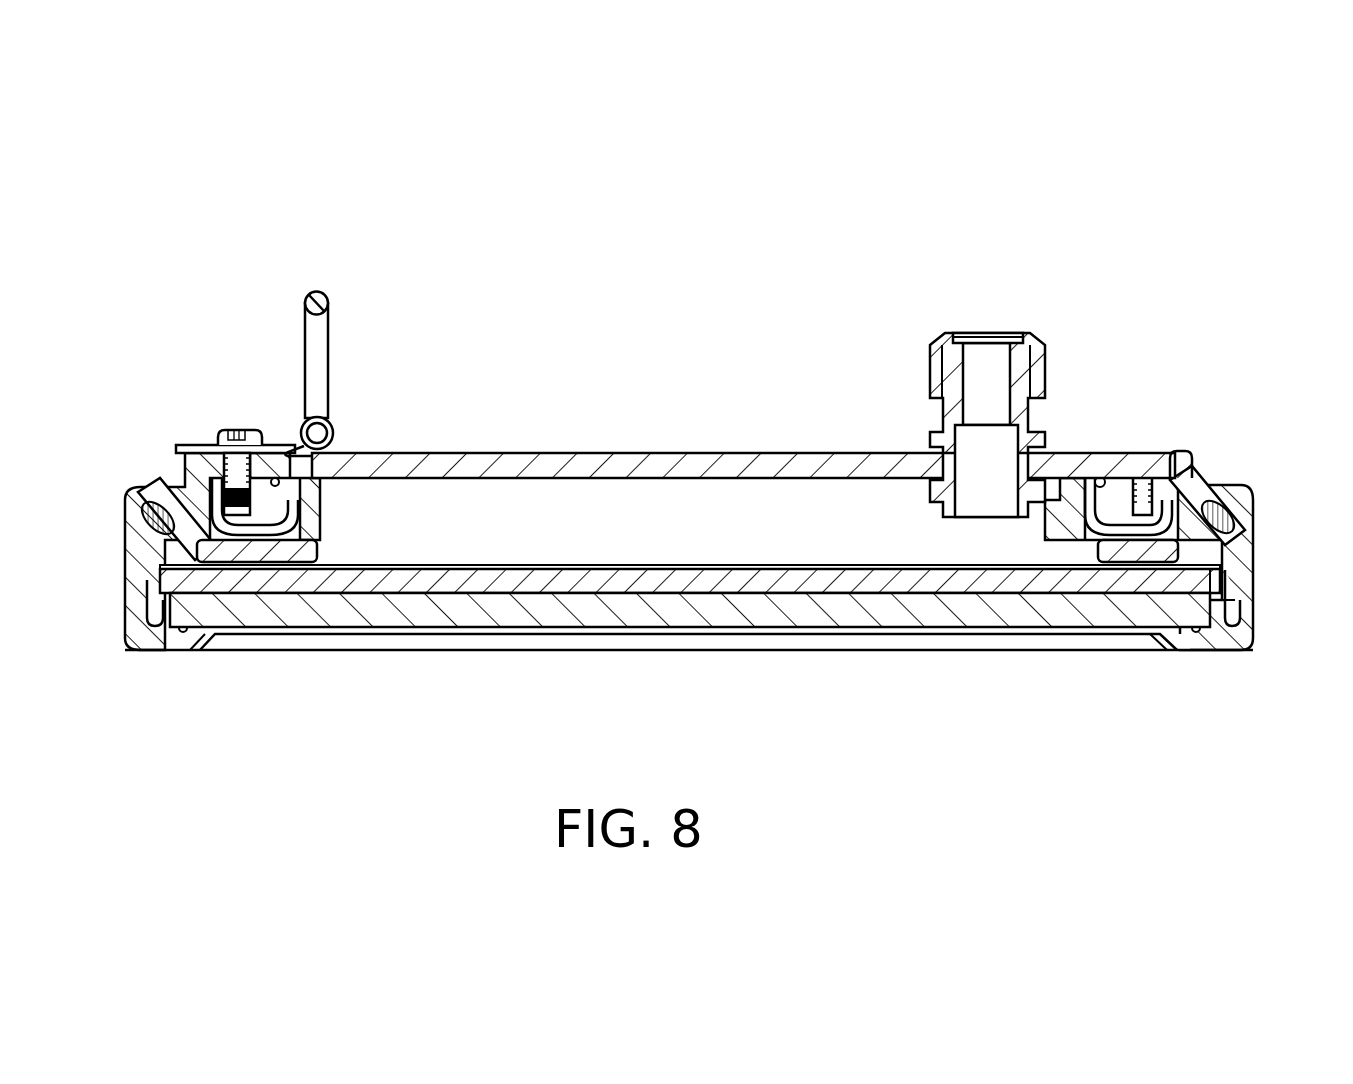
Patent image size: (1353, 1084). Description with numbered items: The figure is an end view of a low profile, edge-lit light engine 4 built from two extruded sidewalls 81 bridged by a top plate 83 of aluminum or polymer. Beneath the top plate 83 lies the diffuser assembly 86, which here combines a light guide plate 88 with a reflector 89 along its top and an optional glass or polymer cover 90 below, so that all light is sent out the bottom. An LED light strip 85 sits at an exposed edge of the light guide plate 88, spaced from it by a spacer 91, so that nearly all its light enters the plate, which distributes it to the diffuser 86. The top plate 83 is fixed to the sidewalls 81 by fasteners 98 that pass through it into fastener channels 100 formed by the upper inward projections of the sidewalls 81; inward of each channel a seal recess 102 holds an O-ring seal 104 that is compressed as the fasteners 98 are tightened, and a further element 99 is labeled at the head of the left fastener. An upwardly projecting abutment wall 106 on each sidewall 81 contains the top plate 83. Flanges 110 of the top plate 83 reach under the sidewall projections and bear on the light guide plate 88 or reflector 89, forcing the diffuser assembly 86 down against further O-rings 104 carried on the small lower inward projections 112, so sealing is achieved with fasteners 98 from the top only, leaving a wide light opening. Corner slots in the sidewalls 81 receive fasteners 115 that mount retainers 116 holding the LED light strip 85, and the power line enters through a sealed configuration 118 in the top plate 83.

The light engine 4 is at (778, 660).
The sidewall 81 is at (135, 518).
The top plate 83 is at (508, 456).
The LED light strip 85 is at (1236, 606).
The diffuser assembly 86 is at (468, 630).
The light guide plate 88 is at (661, 584).
The reflector 89 is at (657, 565).
The cover 90 is at (515, 633).
The spacer 91 is at (1200, 585).
The fastener 98 is at (218, 490).
The clamp bar 99 is at (211, 441).
The fastener channel 100 is at (285, 522).
The seal recess 102 is at (283, 485).
The O-ring seal 104 is at (283, 480).
The abutment wall 106 is at (193, 470).
The flange 110 is at (290, 552).
The lower inwardly-disposed projection 112 is at (185, 635).
The fastener 115 is at (150, 503).
The retainer 116 is at (148, 585).
The sealed configuration 118 is at (989, 326).